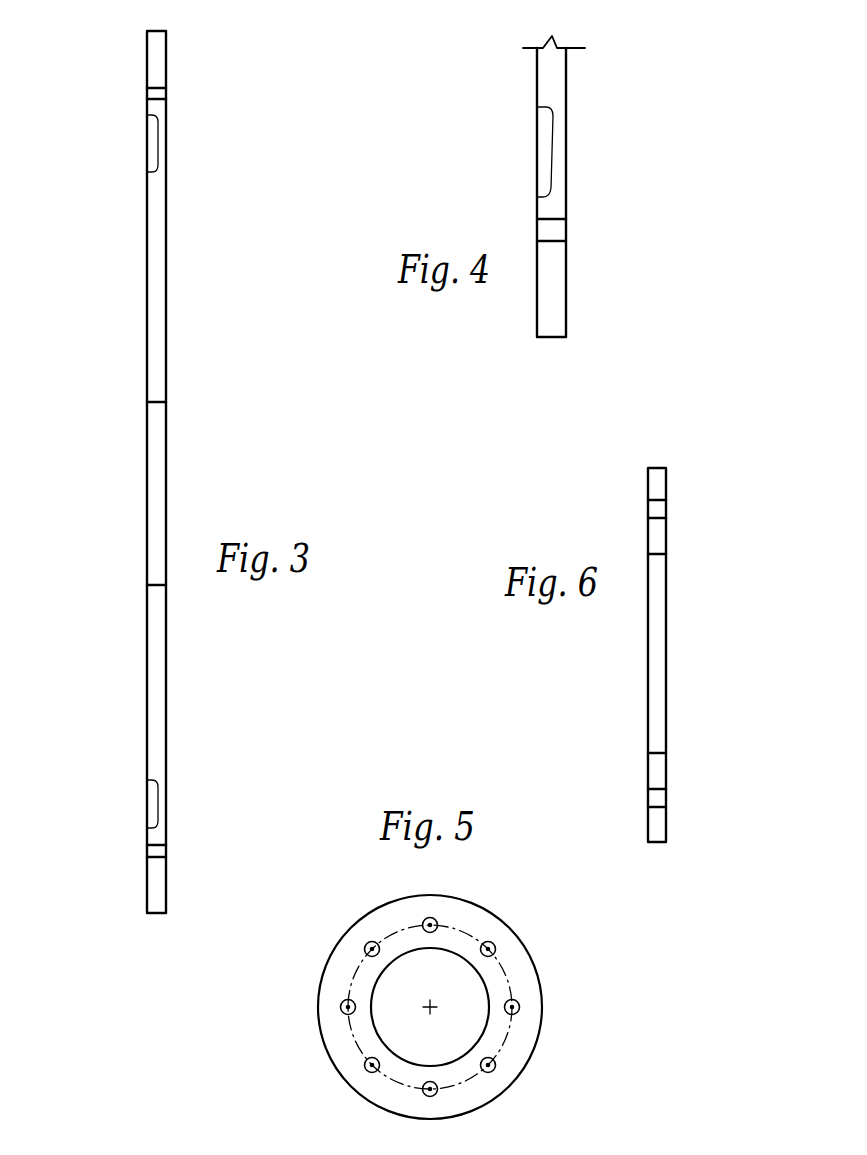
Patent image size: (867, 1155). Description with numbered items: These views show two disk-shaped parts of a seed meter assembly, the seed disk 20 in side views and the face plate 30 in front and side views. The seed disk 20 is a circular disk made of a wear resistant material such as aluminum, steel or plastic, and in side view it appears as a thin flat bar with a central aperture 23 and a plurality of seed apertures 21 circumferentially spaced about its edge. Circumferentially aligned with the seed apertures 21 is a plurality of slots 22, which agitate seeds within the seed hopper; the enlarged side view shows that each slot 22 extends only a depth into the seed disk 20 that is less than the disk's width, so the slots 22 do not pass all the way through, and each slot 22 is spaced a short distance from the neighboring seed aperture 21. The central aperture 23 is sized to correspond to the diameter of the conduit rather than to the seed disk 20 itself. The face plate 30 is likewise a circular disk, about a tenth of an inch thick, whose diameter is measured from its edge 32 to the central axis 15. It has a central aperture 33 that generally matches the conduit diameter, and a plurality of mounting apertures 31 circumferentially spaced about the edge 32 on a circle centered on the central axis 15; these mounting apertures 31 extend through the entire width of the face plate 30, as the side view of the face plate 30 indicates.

In FIG. 5, the central axis 15 is at (430, 1007).
In FIG. 3, the seed disk 20 is at (180, 221).
In FIG. 3, the seed apertures 21 is at (162, 93).
In FIG. 4, the seed apertures 21 is at (557, 231).
In FIG. 3, the slots 22 is at (150, 143).
In FIG. 4, the slots 22 is at (537, 145).
In FIG. 3, the central aperture 23 is at (153, 441).
In FIG. 6, the face plate 30 is at (641, 662).
In FIG. 5, the face plate 30 is at (535, 1050).
In FIG. 6, the mounting apertures 31 is at (660, 510).
In FIG. 5, the mounting apertures 31 is at (366, 1064).
In FIG. 5, the edge 32 is at (512, 993).
In FIG. 6, the central aperture 33 is at (668, 627).
In FIG. 5, the central aperture 33 is at (488, 987).